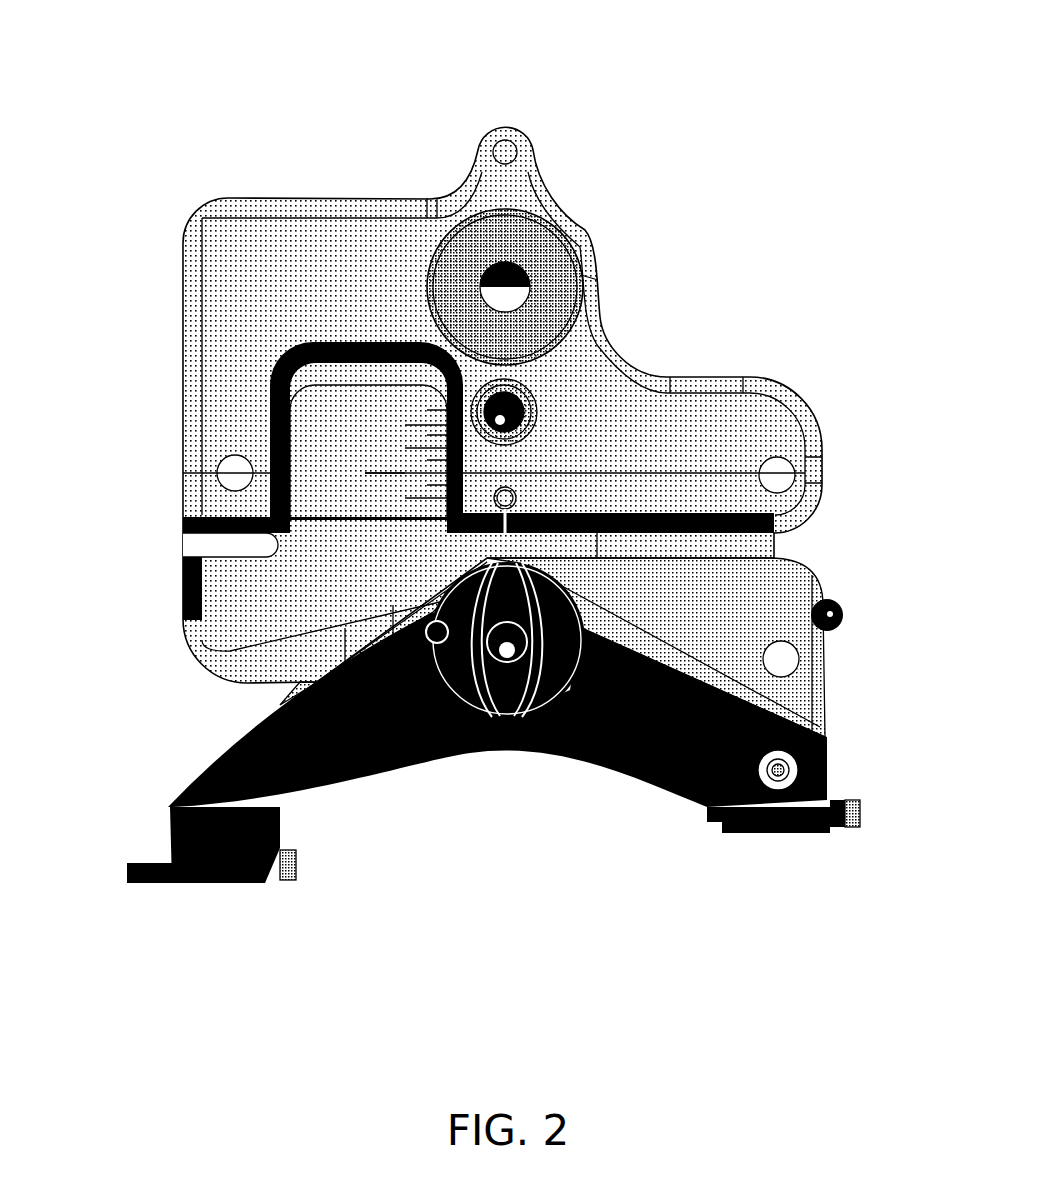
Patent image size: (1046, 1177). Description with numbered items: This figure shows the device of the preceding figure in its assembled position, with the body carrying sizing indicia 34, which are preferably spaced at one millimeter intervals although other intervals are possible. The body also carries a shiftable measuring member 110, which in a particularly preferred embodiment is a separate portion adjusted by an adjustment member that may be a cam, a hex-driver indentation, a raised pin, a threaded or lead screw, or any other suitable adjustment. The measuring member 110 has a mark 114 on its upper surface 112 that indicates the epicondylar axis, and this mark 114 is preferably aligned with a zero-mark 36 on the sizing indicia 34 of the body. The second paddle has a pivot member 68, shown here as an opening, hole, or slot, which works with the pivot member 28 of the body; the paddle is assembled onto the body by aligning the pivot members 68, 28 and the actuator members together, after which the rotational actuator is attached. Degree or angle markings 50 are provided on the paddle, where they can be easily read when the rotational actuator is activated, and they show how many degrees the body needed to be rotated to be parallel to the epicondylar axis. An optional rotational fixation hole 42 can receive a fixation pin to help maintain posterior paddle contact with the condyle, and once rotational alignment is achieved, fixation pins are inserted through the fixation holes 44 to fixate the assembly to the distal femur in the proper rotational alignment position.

The shiftable measuring member 110 is at (840, 371).
The upper surface 112 is at (320, 235).
The mark 114 is at (567, 473).
The sizing indicia 34 is at (380, 437).
The zero-mark 36 is at (383, 476).
The fixation holes 44 is at (833, 610).
The rotational fixation hole 42 is at (784, 660).
The pivot member 68 is at (795, 765).
The pivot member 28 is at (795, 775).
The degree or angle markings 50 is at (432, 643).